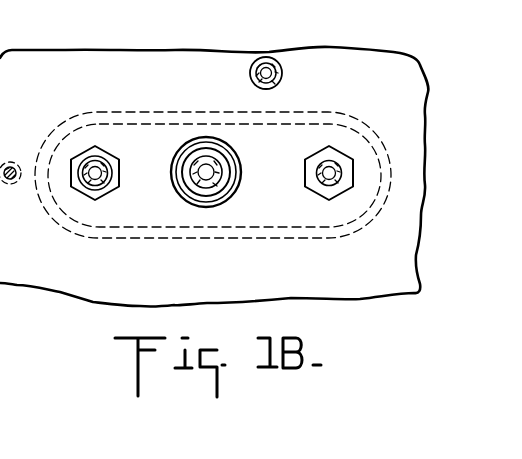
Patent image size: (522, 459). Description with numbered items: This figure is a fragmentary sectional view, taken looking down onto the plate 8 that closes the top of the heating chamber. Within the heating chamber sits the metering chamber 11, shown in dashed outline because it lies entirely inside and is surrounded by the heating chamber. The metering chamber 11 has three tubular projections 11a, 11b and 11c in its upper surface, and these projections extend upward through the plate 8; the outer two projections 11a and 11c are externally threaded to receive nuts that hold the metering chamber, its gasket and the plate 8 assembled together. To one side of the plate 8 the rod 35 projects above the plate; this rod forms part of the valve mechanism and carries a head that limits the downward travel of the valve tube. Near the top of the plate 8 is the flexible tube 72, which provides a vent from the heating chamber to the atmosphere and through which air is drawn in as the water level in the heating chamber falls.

The plate 8 is at (80, 75).
The metering chamber 11 is at (107, 111).
The tubular projection 11a is at (87, 188).
The tubular projection 11b is at (185, 202).
The tubular projection 11c is at (329, 189).
The rod 35 is at (12, 161).
The flexible tube 72 is at (282, 73).